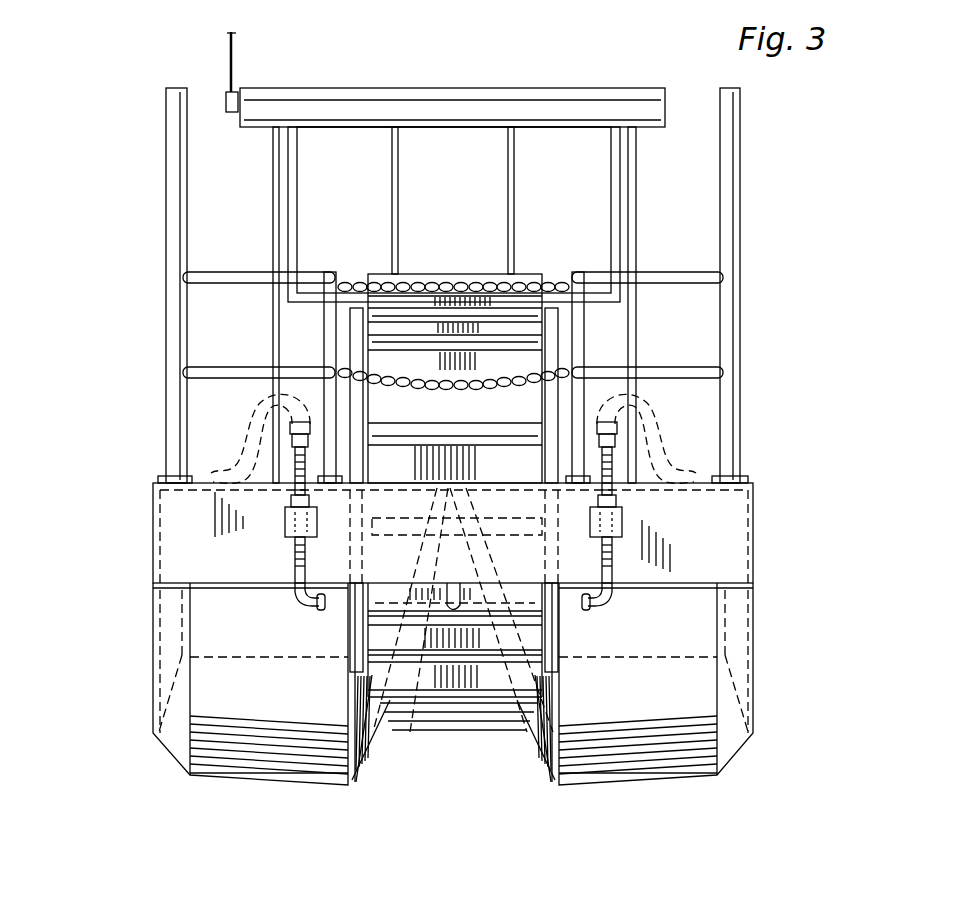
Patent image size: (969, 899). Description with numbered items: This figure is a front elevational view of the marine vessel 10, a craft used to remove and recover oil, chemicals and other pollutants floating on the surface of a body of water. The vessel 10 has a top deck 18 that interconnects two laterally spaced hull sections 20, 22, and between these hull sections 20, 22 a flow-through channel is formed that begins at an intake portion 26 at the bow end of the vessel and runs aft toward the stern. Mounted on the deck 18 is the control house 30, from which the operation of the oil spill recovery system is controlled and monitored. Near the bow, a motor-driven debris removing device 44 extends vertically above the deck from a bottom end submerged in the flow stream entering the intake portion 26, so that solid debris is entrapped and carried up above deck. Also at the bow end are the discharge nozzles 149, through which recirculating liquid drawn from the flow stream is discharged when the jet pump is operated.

The marine vessel 10 is at (137, 218).
The top deck 18 is at (700, 482).
The hull section 20 is at (258, 768).
The hull section 22 is at (637, 765).
The intake portion 26 is at (480, 750).
The control house 30 is at (637, 222).
The debris removing device 44 is at (428, 696).
The discharge nozzles 149 is at (593, 610).